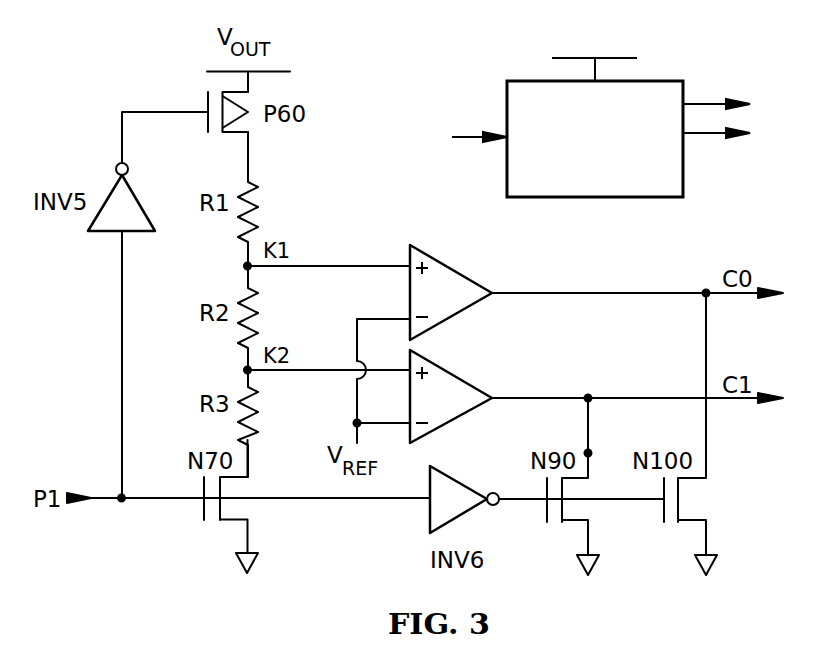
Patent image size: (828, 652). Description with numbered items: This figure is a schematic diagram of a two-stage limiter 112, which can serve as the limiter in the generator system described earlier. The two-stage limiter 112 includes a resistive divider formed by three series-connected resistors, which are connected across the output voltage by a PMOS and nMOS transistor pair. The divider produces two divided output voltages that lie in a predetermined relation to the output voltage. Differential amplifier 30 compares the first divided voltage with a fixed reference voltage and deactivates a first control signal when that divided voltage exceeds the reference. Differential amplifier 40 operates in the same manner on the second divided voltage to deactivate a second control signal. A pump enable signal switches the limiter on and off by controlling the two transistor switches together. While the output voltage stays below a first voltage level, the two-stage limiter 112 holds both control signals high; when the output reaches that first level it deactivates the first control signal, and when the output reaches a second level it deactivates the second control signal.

The two-stage limiter 112 is at (652, 81).
The differential amplifier 30 is at (443, 263).
The differential amplifier 40 is at (443, 368).